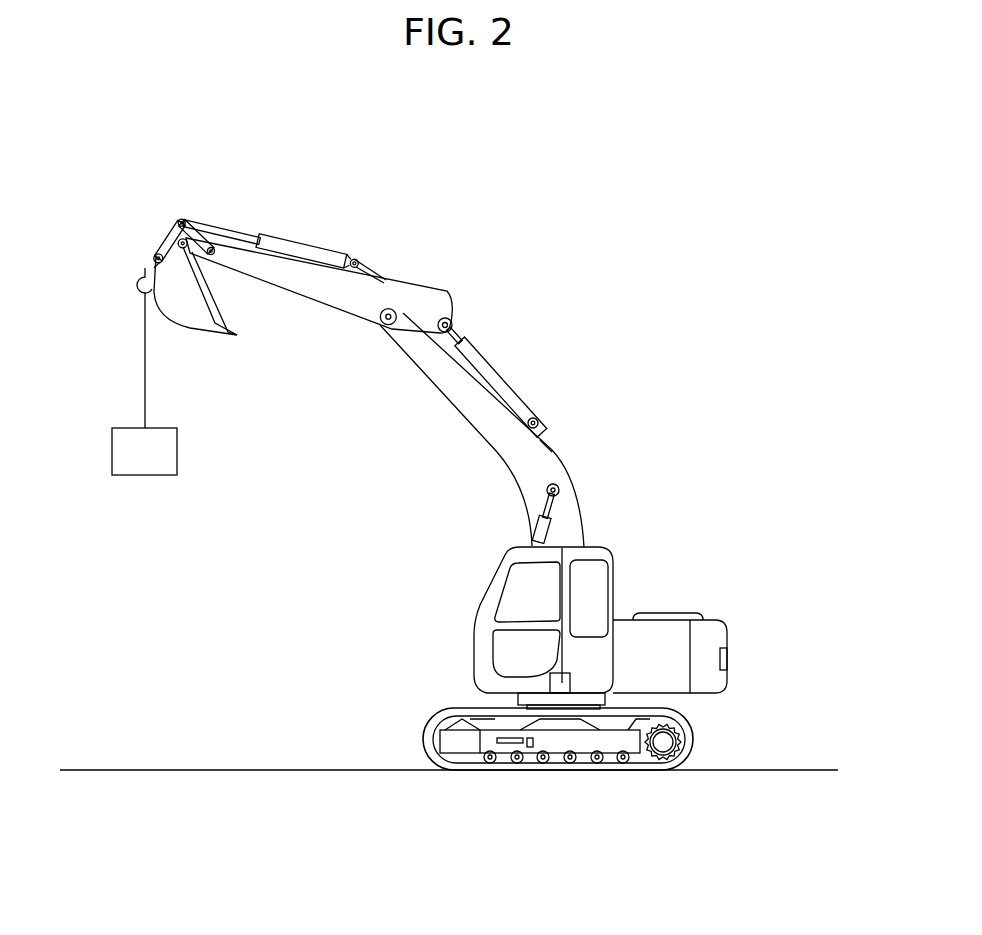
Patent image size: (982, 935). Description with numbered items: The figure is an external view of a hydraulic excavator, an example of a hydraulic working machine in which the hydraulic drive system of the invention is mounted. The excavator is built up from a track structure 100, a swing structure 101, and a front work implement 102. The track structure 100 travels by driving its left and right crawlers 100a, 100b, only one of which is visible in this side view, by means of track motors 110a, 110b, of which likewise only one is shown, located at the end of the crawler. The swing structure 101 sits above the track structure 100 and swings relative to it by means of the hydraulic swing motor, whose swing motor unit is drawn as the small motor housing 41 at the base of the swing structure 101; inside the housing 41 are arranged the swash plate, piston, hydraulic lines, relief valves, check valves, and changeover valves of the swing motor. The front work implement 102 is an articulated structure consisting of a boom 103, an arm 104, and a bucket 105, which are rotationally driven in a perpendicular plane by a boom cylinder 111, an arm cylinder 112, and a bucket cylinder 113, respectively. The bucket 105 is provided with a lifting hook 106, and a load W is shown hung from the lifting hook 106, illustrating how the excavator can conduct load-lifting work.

The track structure 100 is at (597, 751).
The left crawler 100a is at (642, 739).
The right crawler 100b is at (692, 735).
The track motor 110a is at (710, 773).
The track motor 110b is at (663, 745).
The swing structure 101 is at (672, 632).
The front work implement 102 is at (323, 369).
The boom 103 is at (468, 407).
The arm 104 is at (425, 300).
The bucket 105 is at (190, 320).
The lifting hook 106 is at (135, 282).
The boom cylinder 111 is at (538, 530).
The arm cylinder 112 is at (513, 400).
The bucket cylinder 113 is at (308, 250).
The motor housing 41 is at (572, 678).
The load W is at (145, 468).